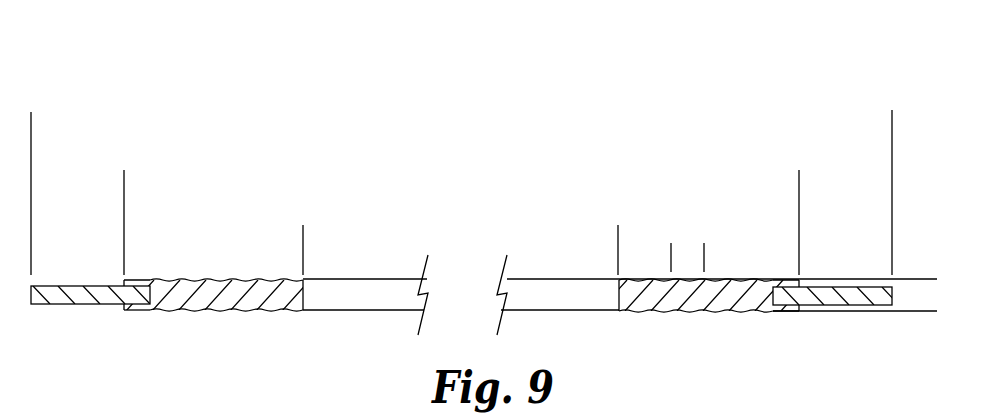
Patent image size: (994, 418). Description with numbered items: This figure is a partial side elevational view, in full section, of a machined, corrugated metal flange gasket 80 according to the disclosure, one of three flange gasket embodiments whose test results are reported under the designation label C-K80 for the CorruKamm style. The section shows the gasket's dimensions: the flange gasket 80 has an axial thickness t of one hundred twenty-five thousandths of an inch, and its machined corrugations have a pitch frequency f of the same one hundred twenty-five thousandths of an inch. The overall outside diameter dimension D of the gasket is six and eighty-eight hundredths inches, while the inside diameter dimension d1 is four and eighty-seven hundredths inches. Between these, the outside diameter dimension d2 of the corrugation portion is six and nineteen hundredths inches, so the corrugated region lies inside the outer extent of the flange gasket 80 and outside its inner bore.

The flange gasket 80 is at (930, 110).
The outside diameter dimension D is at (31, 123).
The outside diameter dimension of the corrugation portion d2 is at (124, 180).
The inside diameter dimension d1 is at (303, 237).
The pitch frequency f is at (633, 252).
The axial thickness t is at (929, 240).